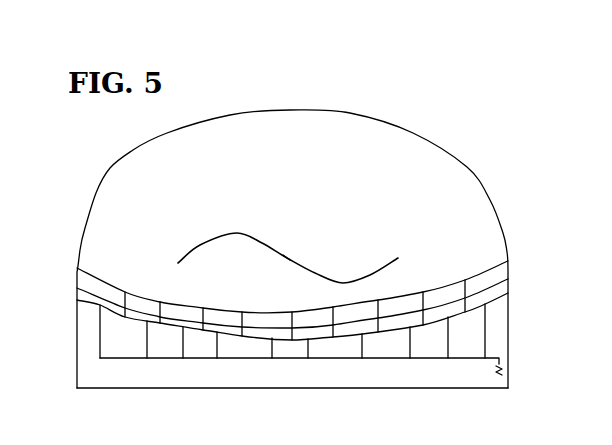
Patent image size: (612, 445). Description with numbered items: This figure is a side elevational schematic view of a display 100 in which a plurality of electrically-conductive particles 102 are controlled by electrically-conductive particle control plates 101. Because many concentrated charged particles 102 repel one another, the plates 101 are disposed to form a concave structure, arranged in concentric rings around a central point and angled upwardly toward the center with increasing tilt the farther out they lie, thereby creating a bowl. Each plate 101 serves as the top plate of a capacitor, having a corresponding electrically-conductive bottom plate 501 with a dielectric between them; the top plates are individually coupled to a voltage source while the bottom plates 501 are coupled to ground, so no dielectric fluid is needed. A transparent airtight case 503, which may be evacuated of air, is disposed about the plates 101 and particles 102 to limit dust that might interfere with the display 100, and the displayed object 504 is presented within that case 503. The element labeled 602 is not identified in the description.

The display 100 is at (315, 427).
The electrically-conductive particle control plate 101 is at (76, 277).
The electrically-conductive particle 102 is at (203, 247).
The electrically-conductive bottom plate 501 is at (77, 300).
The transparent airtight case 503 is at (91, 189).
The displayed object 504 is at (287, 258).
The intermediate layer 602 is at (72, 285).